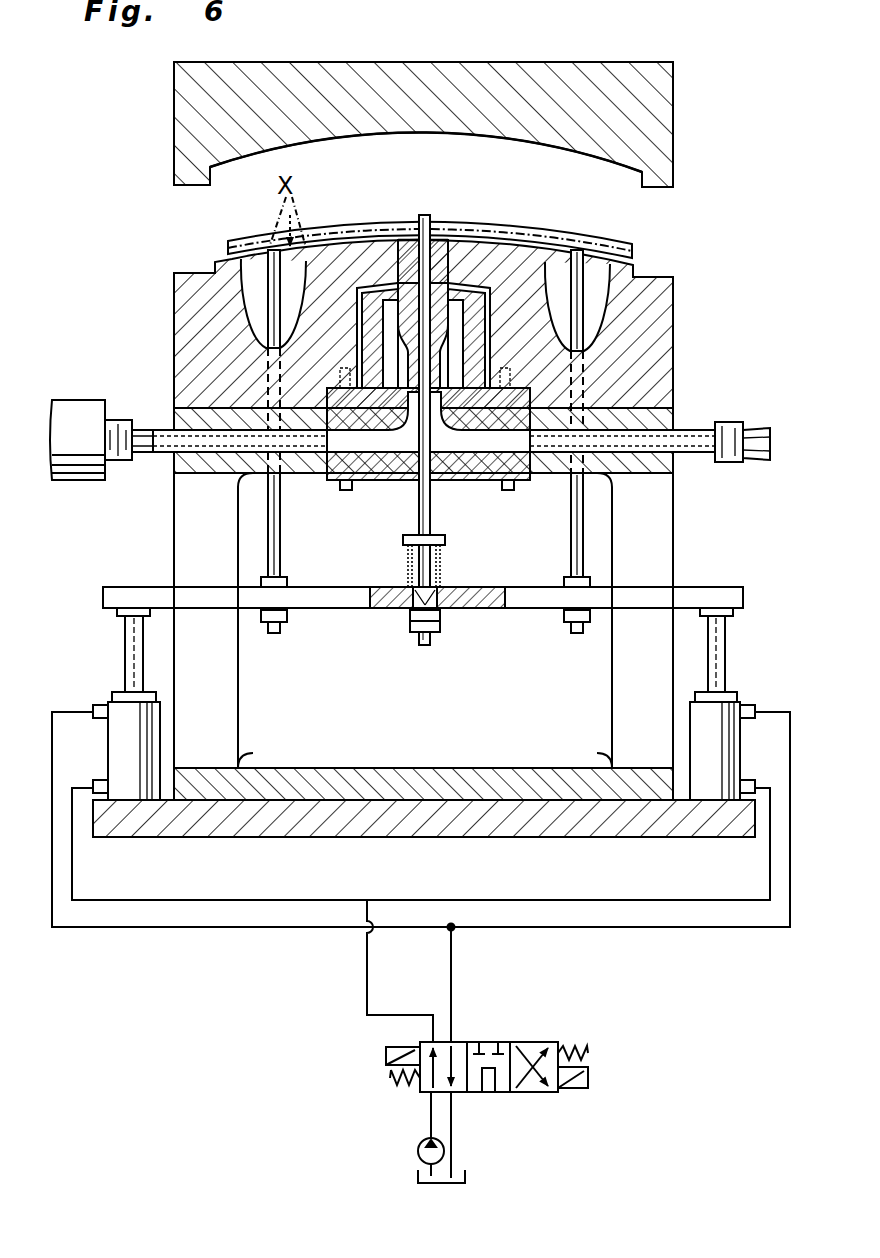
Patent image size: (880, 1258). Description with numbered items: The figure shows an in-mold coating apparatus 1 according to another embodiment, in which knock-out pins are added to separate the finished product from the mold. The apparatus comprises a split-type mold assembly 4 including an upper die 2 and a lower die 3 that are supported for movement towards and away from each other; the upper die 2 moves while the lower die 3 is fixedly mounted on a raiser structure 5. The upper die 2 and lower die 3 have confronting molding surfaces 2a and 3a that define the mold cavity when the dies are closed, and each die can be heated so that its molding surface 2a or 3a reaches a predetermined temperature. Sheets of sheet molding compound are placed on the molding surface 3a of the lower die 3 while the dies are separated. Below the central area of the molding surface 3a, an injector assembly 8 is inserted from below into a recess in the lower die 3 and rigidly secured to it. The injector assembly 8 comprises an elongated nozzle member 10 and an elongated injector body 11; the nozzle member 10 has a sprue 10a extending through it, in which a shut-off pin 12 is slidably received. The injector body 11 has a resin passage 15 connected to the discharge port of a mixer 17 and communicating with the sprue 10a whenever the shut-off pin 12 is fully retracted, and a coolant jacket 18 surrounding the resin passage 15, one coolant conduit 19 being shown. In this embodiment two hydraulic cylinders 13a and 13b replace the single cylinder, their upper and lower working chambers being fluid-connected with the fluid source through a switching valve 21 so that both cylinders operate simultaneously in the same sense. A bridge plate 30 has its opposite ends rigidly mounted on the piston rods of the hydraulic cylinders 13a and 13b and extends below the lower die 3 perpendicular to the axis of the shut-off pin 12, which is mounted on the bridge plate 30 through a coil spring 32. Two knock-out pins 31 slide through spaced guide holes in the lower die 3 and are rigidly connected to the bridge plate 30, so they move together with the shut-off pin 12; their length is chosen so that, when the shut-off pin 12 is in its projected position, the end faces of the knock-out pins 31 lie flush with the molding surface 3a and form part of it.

The in-mold coating apparatus 1 is at (737, 118).
The upper die 2 is at (665, 175).
The molding surface of upper die 2a is at (588, 160).
The lower die 3 is at (660, 292).
The molding surface of lower die 3a is at (528, 244).
The split-type mold assembly 4 is at (760, 184).
The raiser structure 5 is at (618, 683).
The injector assembly 8 is at (372, 490).
The nozzle member 10 is at (408, 244).
The sprue 10a is at (452, 250).
The injector body 11 is at (460, 490).
The shut-off pin 12 is at (428, 236).
The hydraulic cylinder 13a is at (710, 782).
The hydraulic cylinder 13b is at (125, 785).
The resin passage 15 is at (396, 472).
The mixer 17 is at (78, 406).
The coolant jacket 18 is at (486, 480).
The coolant conduit 19 is at (703, 446).
The switching valve 21 is at (508, 1042).
The bridge plate 30 is at (333, 612).
The knock-out pins 31 is at (281, 528).
The coil spring 32 is at (405, 556).